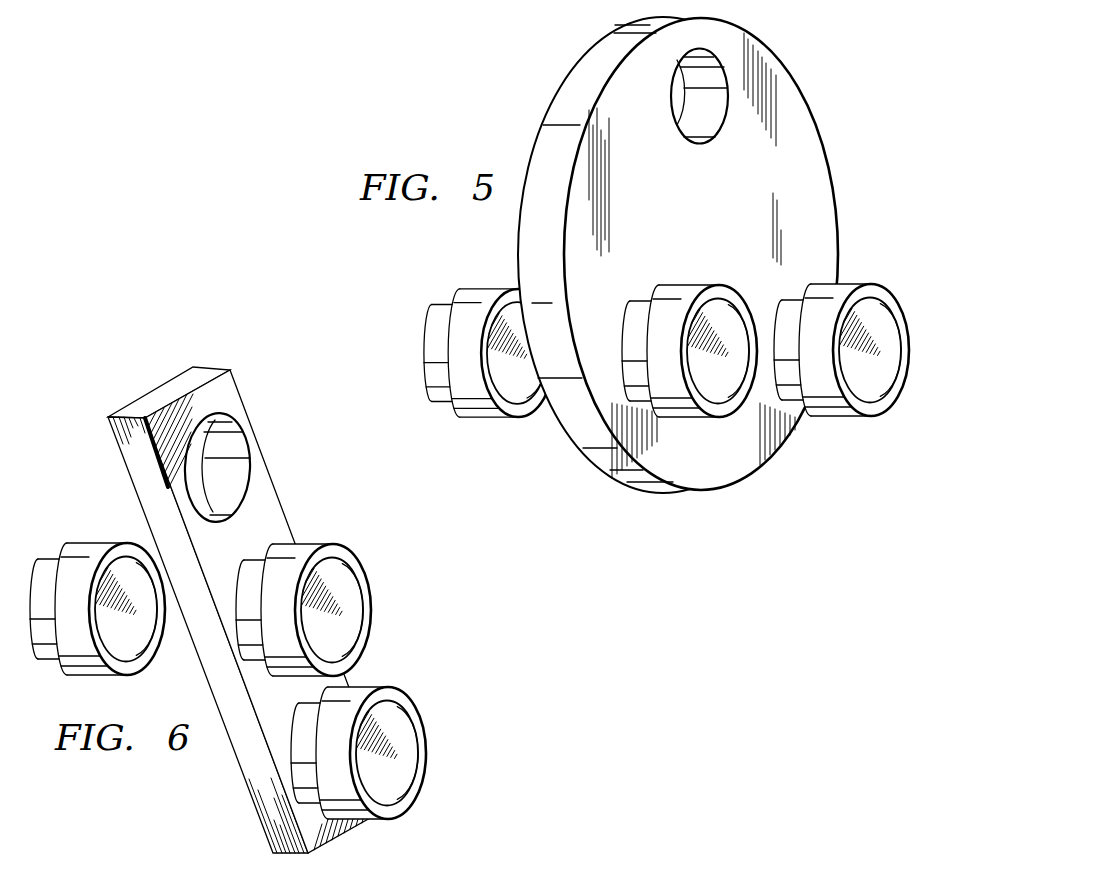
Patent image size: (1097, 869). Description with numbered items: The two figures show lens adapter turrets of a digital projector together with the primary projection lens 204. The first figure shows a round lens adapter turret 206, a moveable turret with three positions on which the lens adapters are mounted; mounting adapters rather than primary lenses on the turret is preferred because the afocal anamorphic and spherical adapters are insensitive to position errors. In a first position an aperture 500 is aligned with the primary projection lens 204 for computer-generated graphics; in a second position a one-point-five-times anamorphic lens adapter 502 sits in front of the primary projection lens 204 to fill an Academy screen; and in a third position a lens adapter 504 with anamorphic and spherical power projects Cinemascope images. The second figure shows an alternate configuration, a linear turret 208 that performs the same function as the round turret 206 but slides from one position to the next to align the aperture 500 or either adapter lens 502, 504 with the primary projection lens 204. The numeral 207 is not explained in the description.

In FIG. 5, the primary projection lens 204 is at (428, 370).
In FIG. 6, the primary projection lens 204 is at (101, 549).
In FIG. 5, the lens adapter turret 206 is at (593, 57).
In FIG. 5, the member 207 is at (627, 859).
In FIG. 6, the linear turret 208 is at (143, 402).
In FIG. 5, the aperture 500 is at (702, 122).
In FIG. 6, the aperture 500 is at (230, 477).
In FIG. 5, the anamorphic lens adapter 502 is at (693, 418).
In FIG. 6, the anamorphic lens adapter 502 is at (358, 560).
In FIG. 5, the lens adapter 504 is at (845, 418).
In FIG. 6, the lens adapter 504 is at (412, 701).